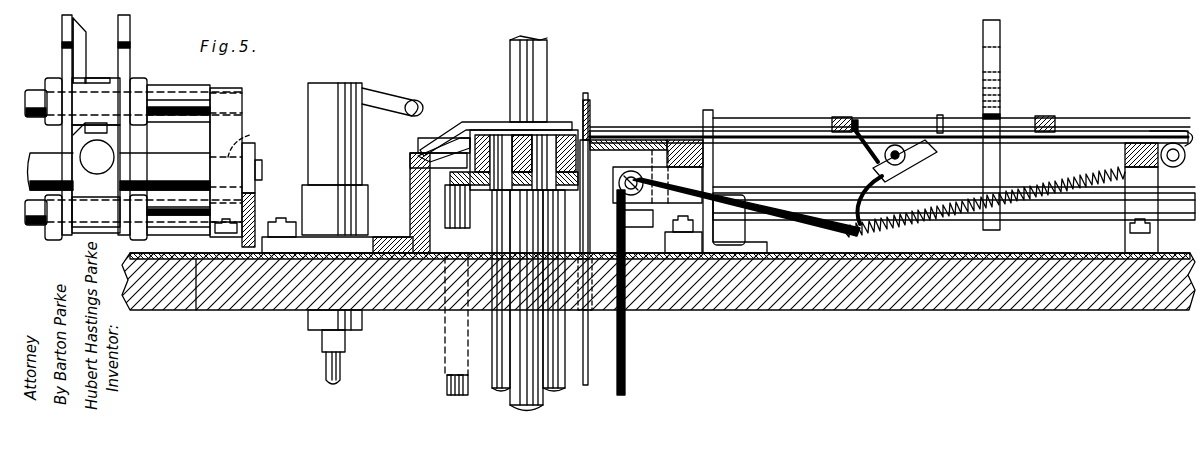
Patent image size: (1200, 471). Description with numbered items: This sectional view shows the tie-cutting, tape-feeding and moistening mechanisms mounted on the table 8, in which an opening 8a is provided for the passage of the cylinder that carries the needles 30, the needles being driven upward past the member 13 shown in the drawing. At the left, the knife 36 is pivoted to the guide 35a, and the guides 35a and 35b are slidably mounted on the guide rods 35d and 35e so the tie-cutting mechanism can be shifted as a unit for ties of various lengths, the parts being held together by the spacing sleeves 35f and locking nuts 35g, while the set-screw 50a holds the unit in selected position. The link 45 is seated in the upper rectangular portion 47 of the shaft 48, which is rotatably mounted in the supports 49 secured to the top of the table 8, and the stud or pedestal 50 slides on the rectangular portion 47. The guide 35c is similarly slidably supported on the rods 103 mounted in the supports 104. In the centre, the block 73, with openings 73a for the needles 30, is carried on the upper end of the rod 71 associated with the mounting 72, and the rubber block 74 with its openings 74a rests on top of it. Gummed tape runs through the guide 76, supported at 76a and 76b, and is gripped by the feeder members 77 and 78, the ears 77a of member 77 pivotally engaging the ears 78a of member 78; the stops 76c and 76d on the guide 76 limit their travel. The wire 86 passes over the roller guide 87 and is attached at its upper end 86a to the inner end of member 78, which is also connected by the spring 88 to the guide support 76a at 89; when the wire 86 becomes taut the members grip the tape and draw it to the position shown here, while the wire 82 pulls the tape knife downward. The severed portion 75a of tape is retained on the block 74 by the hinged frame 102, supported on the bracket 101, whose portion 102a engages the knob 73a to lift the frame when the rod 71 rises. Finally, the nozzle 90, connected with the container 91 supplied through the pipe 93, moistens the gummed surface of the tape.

The table 8 is at (250, 298).
The opening in table 8a is at (590, 300).
The shaft 13 is at (545, 50).
The needles 30 is at (494, 372).
The guide 35a is at (62, 30).
The guide 35b is at (130, 32).
The guide 35c is at (1000, 28).
The guide rod 35d is at (152, 98).
The guide rod 35e is at (196, 310).
The spacing sleeves 35f is at (95, 80).
The locking nuts 35g is at (50, 80).
The knife 36 is at (80, 32).
The link 45 is at (252, 213).
The rectangular portion of shaft 47 is at (165, 160).
The shaft 48 is at (252, 135).
The supports 49 is at (235, 88).
The stud or pedestal 50 is at (110, 128).
The set-screw 50a is at (88, 153).
The rod 71 is at (447, 388).
The rod mounting 72 is at (450, 352).
The block 73 is at (520, 190).
The openings / knob 73a is at (440, 158).
The rubber block 74 is at (540, 135).
The openings 74a is at (500, 140).
The severed portion of tape 75a is at (525, 130).
The guide 76 is at (1095, 128).
The guide support 76a is at (1135, 212).
The guide support 76b is at (688, 250).
The stop 76c is at (840, 115).
The stop 76d is at (1045, 115).
The feeder member 77 is at (855, 118).
The ears 77a is at (862, 145).
The feeder member 78 is at (900, 168).
The ears 78a is at (878, 172).
The wire 82 is at (585, 215).
The wire 86 is at (627, 350).
The upper end of wire 86a is at (850, 232).
The roller guide 87 is at (633, 172).
The spring 88 is at (1060, 185).
The spring connection point 89 is at (1140, 173).
The nozzle 90 is at (415, 100).
The container 91 is at (318, 95).
The pipe 93 is at (328, 365).
The bracket 101 is at (412, 258).
The hinged frame or guide 102 is at (460, 122).
The portion of frame 102a is at (455, 140).
The rods 103 is at (765, 118).
The supports 104 is at (707, 110).